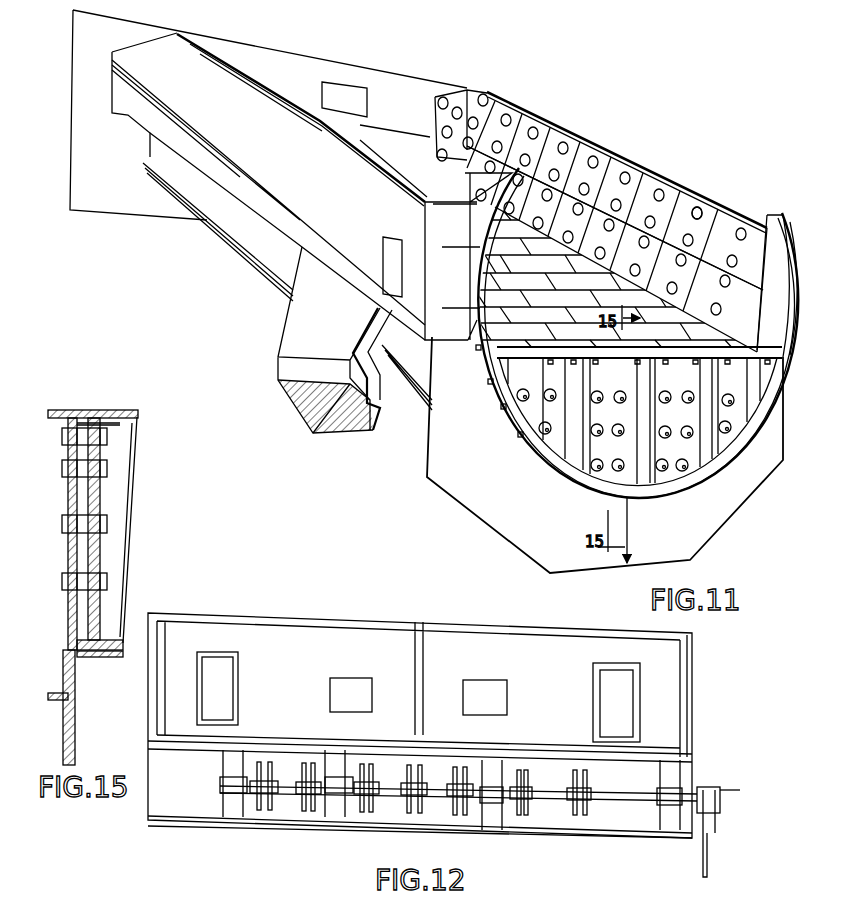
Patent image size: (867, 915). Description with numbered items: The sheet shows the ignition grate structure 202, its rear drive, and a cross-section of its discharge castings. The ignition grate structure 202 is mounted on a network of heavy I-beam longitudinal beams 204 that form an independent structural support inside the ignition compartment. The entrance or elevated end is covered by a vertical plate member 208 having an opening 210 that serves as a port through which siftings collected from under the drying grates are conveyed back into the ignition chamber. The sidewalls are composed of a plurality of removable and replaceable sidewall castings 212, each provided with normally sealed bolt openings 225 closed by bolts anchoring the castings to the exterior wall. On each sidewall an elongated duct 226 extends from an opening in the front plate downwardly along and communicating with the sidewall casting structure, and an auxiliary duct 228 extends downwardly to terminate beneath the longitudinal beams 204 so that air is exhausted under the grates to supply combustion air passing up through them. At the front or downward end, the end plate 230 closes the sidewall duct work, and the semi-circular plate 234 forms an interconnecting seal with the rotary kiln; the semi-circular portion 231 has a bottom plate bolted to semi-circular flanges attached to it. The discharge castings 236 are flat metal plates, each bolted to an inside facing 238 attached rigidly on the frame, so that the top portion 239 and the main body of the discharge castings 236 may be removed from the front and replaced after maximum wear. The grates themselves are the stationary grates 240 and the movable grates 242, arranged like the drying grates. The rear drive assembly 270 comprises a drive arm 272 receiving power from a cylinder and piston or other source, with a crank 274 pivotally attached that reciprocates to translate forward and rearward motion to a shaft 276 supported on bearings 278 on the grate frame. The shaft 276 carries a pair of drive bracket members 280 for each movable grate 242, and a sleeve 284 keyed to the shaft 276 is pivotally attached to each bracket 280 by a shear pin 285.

In FIG. 11, the ignition grate structure 202 is at (622, 152).
In FIG. 11, the longitudinal beams 204 is at (265, 252).
In FIG. 11, the vertical plate member 208 is at (298, 53).
In FIG. 11, the opening 210 is at (367, 110).
In FIG. 11, the sidewall castings 212 is at (667, 189).
In FIG. 11, the bolt openings 225 is at (702, 206).
In FIG. 11, the elongated duct 226 is at (298, 177).
In FIG. 11, the auxiliary duct 228 is at (293, 322).
In FIG. 11, the end plate 230 is at (792, 333).
In FIG. 11, the semi-circular portion 231 is at (668, 493).
In FIG. 11, the semi-circular plate 234 is at (790, 262).
In FIG. 11, the discharge castings 236 is at (555, 378).
In FIG. 15, the discharge castings 236 is at (110, 497).
In FIG. 11, the inside facing 238 is at (515, 497).
In FIG. 15, the inside facing 238 is at (68, 610).
In FIG. 11, the top portion 239 is at (150, 207).
In FIG. 15, the top portion 239 is at (95, 404).
In FIG. 11, the stationary grates 240 is at (614, 360).
In FIG. 11, the movable grates 242 is at (666, 360).
In FIG. 12, the drive assembly 270 is at (724, 790).
In FIG. 12, the drive arm 272 is at (710, 855).
In FIG. 12, the crank 274 is at (722, 802).
In FIG. 12, the shaft 276 is at (680, 770).
In FIG. 12, the bearings 278 is at (223, 785).
In FIG. 12, the drive bracket members 280 is at (373, 784).
In FIG. 12, the sleeve 284 is at (590, 782).
In FIG. 12, the shear pin 285 is at (530, 805).